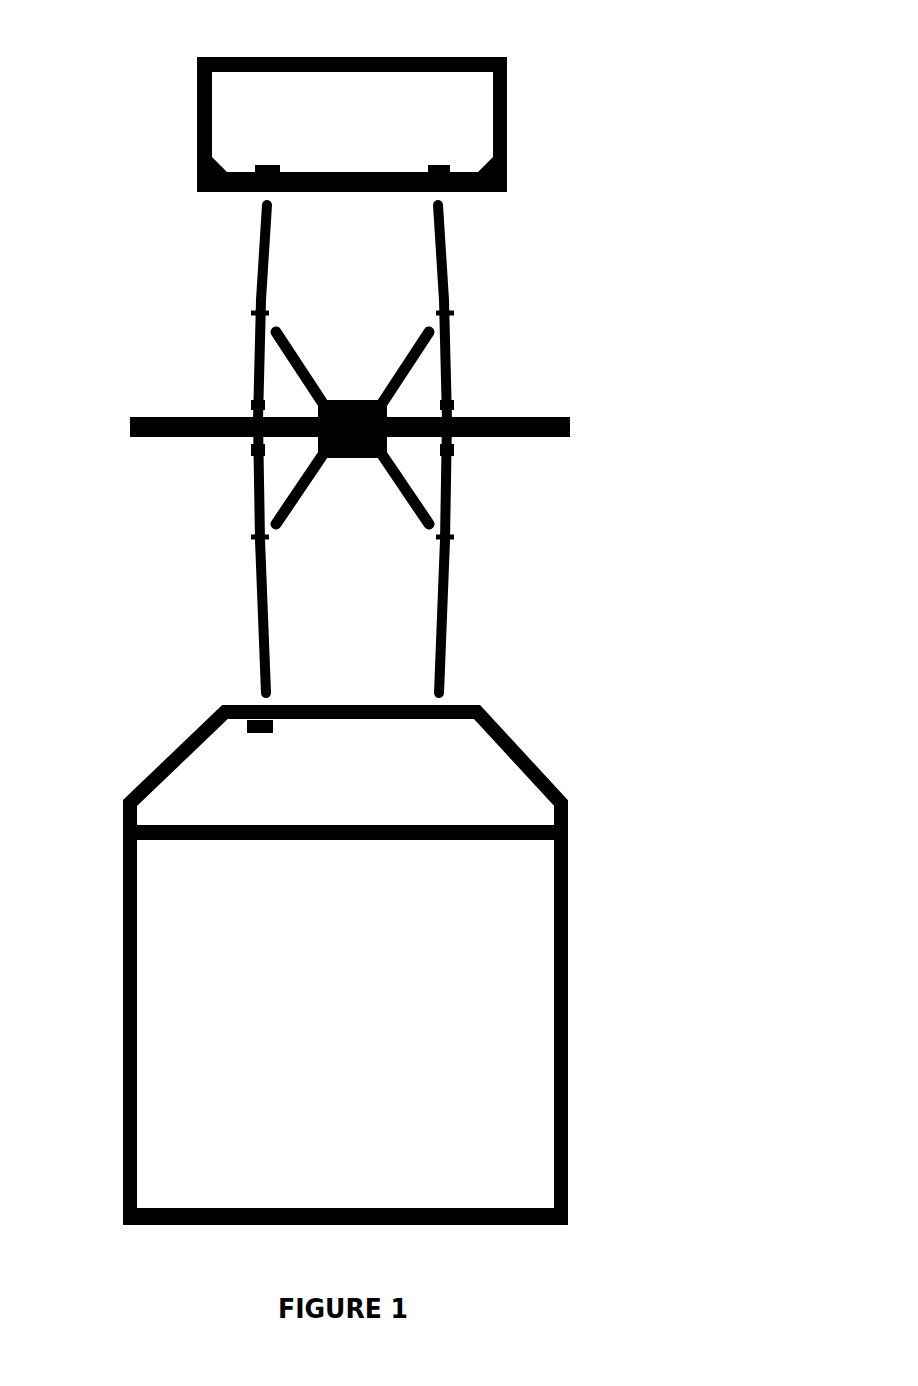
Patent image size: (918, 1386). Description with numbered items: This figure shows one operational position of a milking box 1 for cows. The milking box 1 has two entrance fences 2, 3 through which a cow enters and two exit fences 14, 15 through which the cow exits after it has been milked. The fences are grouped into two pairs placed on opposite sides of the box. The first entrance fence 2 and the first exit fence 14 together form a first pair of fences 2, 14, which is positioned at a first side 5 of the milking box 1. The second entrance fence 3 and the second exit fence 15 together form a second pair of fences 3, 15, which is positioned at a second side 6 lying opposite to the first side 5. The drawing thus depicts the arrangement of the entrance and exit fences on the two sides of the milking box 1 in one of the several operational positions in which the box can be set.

The milking box 1 is at (390, 449).
The first entrance fence 2 is at (242, 606).
The second entrance fence 3 is at (458, 596).
The first side 5 is at (132, 453).
The second side 6 is at (566, 453).
The first exit fence 14 is at (246, 276).
The second exit fence 15 is at (459, 280).